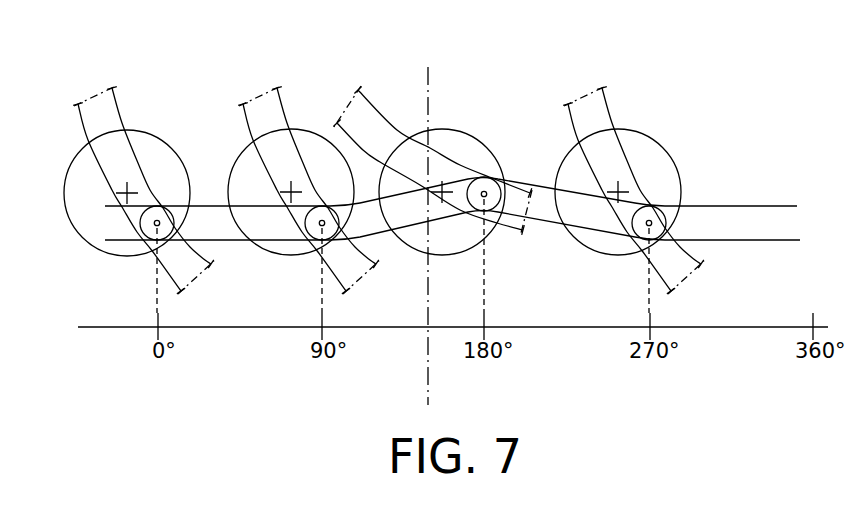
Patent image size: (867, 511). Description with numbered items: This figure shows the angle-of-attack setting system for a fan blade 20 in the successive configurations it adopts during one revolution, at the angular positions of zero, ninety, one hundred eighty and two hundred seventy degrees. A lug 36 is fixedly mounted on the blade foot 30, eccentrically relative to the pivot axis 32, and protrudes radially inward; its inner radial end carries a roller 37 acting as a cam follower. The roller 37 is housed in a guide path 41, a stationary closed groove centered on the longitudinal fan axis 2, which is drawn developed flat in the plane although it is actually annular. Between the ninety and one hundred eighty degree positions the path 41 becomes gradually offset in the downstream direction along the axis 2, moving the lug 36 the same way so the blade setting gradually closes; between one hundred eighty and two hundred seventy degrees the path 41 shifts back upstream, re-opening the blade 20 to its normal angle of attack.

The longitudinal fan axis 2 is at (428, 80).
The blade 20 is at (118, 108).
The blade foot 30 is at (151, 148).
The pivot axis 32 is at (123, 190).
The lug 36 is at (158, 206).
The roller 37 is at (151, 230).
The guide path 41 is at (747, 215).